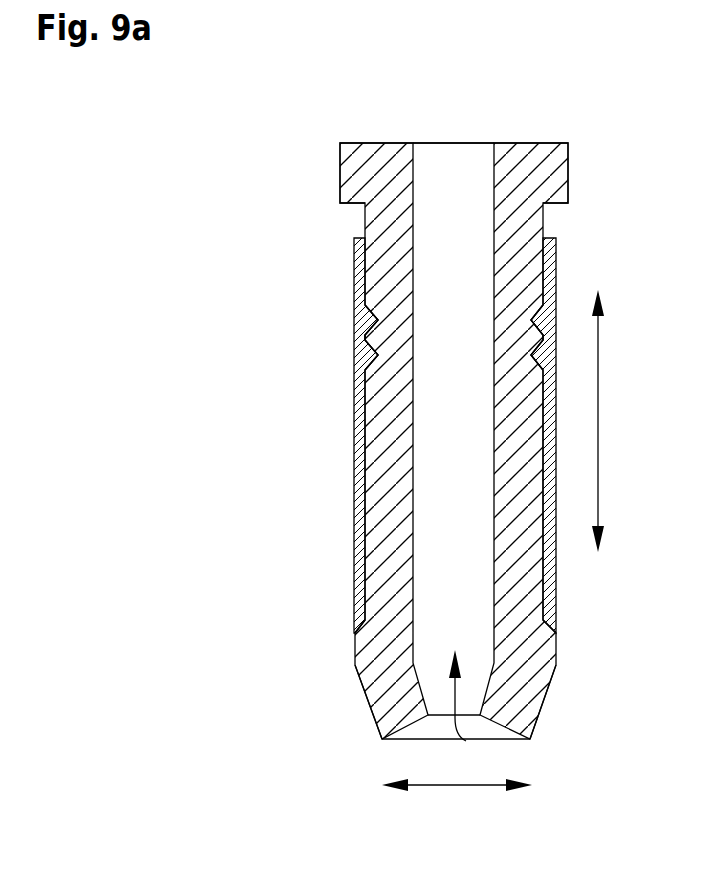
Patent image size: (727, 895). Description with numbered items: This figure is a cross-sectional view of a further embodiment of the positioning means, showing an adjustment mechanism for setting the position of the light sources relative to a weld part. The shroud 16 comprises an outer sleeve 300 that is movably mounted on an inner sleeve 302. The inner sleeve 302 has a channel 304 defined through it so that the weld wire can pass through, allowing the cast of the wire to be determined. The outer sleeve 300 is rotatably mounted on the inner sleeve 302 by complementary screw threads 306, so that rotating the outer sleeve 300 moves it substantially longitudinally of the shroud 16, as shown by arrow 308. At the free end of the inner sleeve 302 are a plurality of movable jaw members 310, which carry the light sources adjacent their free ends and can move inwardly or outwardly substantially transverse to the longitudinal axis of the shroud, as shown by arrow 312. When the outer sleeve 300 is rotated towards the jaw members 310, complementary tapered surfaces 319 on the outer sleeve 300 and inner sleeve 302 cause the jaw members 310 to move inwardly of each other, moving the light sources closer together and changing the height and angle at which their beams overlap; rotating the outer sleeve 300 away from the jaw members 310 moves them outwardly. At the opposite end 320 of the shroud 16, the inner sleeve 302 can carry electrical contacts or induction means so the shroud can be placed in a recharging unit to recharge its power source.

The shroud 16 is at (290, 446).
The outer sleeve 300 is at (557, 592).
The inner sleeve 302 is at (523, 222).
The channel 304 is at (463, 740).
The complementary screw threads 306 is at (354, 342).
The arrow 308 is at (600, 418).
The movable jaw members 310 is at (372, 718).
The arrow 312 is at (457, 787).
The complementary tapered surfaces 319 is at (356, 622).
The end 320 is at (372, 147).